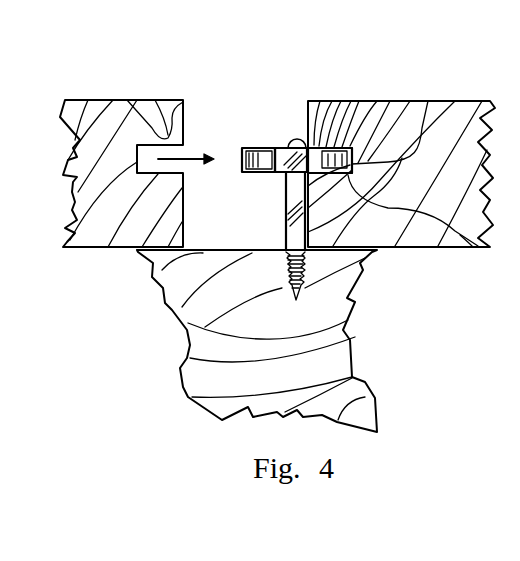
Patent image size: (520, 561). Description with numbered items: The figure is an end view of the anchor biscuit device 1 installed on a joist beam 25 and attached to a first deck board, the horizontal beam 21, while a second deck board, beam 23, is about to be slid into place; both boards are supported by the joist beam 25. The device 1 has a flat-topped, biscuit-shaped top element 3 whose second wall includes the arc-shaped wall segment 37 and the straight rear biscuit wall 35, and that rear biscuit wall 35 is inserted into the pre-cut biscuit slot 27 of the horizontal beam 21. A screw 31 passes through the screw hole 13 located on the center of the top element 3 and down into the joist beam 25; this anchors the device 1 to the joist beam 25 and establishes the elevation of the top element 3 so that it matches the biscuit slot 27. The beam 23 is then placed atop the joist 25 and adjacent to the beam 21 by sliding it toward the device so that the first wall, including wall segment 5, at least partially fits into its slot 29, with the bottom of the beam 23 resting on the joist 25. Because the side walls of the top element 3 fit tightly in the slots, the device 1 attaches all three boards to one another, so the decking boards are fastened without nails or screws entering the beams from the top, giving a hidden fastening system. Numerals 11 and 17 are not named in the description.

The anchor biscuit device 1 is at (298, 165).
The top element 3 is at (252, 148).
The first wall segment 5 is at (260, 173).
The second flange 11 is at (335, 130).
The screw hole 13 is at (272, 140).
The stem 17 is at (288, 207).
The horizontal beam 21 is at (416, 110).
The beam 23 is at (80, 113).
The joist beam 25 is at (332, 342).
The pre-cut biscuit slot 27 is at (470, 243).
The slot 29 is at (180, 106).
The screw 31 is at (298, 138).
The rear biscuit wall 35 is at (430, 115).
The wall segment 37 is at (360, 128).